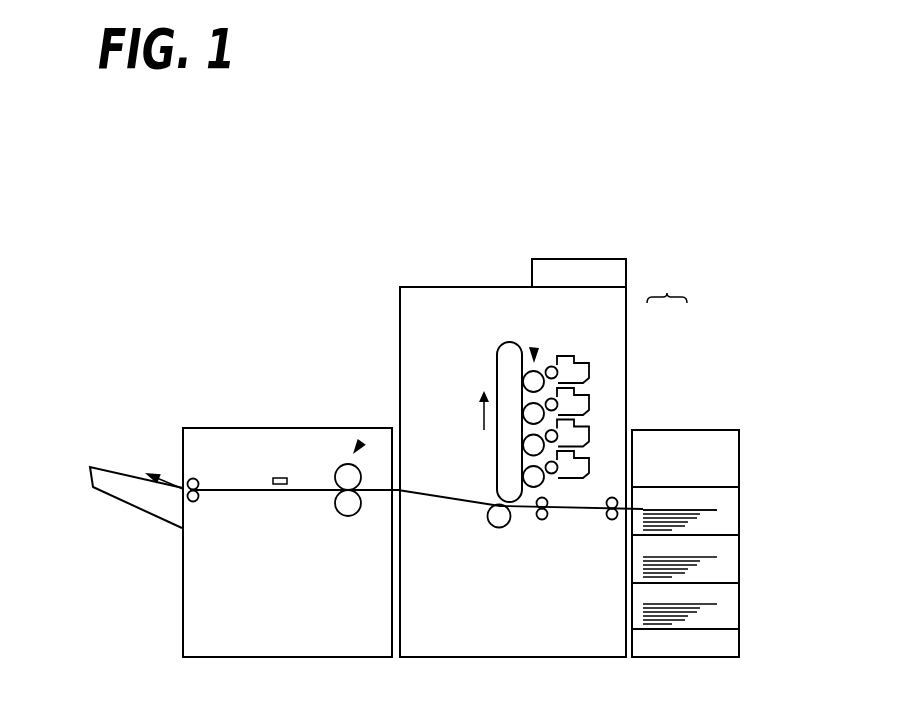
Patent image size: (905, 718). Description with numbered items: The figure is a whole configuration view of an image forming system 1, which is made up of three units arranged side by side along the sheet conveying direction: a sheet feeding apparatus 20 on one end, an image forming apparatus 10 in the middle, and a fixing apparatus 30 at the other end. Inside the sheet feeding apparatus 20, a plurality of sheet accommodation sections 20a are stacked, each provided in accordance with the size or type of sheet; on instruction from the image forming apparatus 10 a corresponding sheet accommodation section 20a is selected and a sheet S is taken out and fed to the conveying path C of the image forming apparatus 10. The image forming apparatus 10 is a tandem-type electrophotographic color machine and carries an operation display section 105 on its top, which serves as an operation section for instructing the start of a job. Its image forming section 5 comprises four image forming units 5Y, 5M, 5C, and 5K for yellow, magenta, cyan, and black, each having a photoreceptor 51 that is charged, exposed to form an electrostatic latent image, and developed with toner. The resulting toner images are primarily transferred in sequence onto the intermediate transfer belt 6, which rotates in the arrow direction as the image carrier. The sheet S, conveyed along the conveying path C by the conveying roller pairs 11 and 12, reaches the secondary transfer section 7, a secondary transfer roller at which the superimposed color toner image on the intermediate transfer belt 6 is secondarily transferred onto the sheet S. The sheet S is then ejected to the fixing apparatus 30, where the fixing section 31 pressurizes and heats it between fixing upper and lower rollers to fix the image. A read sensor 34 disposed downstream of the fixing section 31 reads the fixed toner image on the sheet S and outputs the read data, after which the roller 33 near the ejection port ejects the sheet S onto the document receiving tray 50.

The image forming system 1 is at (375, 113).
The image forming apparatus 10 is at (437, 287).
The operation display section 105 is at (575, 265).
The fixing apparatus 30 is at (287, 428).
The sheet feeding apparatus 20 is at (723, 430).
The sheet accommodation section 20a is at (735, 515).
The sheet S is at (667, 508).
The intermediate transfer belt 6 is at (496, 362).
The photoreceptor 51 is at (535, 347).
The image forming section 5 is at (667, 285).
The image forming unit 5Y is at (589, 370).
The image forming unit 5M is at (589, 402).
The image forming unit 5C is at (589, 433).
The image forming unit 5K is at (589, 465).
The conveying path C is at (440, 490).
The secondary transfer section 7 is at (498, 528).
The roller 12 is at (542, 521).
The roller 11 is at (612, 521).
The fixing section 31 is at (358, 446).
The read sensor 34 is at (278, 477).
The roller 33 is at (192, 501).
The document receiving tray 50 is at (90, 469).